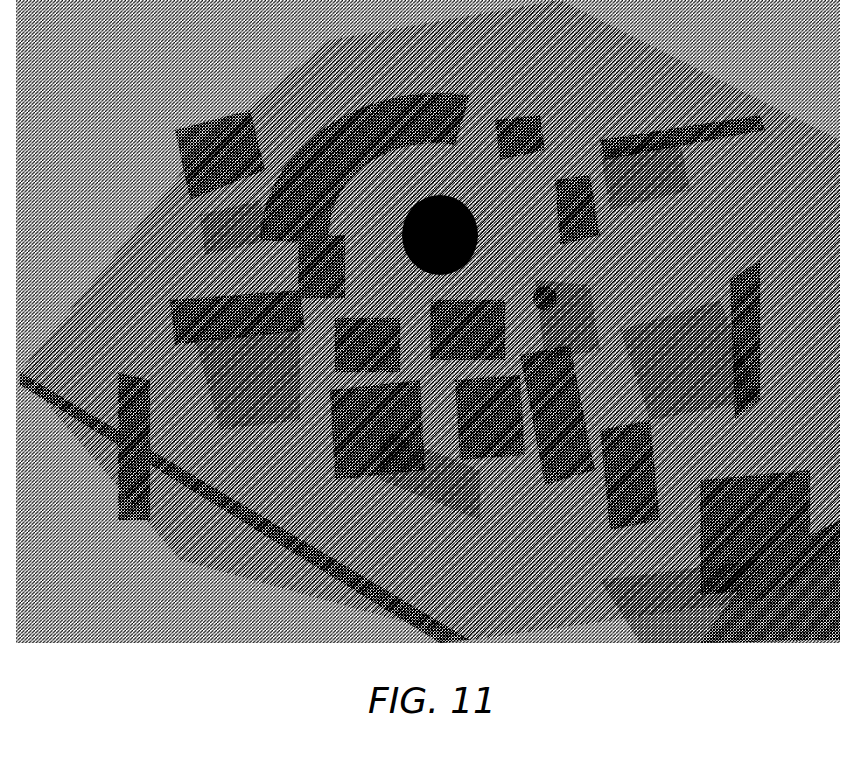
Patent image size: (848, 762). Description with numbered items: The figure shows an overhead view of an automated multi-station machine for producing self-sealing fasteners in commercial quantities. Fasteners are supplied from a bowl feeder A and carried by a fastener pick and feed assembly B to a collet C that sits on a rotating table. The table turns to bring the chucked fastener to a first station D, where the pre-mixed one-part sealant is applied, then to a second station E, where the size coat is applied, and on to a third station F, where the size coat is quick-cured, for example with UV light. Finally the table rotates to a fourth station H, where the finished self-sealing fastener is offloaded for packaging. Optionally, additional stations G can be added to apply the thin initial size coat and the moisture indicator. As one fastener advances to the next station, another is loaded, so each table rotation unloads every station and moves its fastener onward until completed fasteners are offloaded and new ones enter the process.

The bowl feeder A is at (755, 525).
The fastener pick and feed assembly B is at (690, 340).
The collet C is at (550, 320).
The first station D is at (467, 330).
The second station E is at (321, 263).
The third station F is at (367, 326).
The additional stations G is at (365, 169).
The fourth station H is at (660, 180).